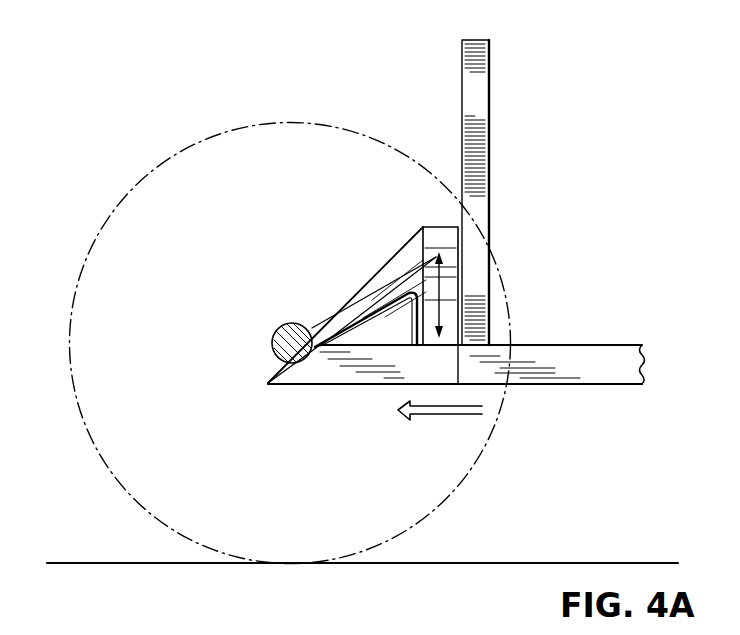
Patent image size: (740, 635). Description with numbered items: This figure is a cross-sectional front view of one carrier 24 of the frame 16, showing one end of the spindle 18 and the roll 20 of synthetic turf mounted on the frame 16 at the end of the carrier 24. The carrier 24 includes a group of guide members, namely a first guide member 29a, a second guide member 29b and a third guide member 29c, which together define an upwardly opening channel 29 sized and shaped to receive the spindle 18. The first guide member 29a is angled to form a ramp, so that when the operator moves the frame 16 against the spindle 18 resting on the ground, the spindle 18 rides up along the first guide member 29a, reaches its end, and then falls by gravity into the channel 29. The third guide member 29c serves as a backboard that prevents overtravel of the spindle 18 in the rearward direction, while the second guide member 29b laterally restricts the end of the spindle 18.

The frame 16 is at (617, 335).
The spindle 18 is at (277, 333).
The roll 20 is at (345, 128).
The carrier 24 is at (593, 376).
The channel 29 is at (400, 211).
The first guide member 29a is at (382, 280).
The second guide member 29b is at (437, 232).
The third guide member 29c is at (487, 102).